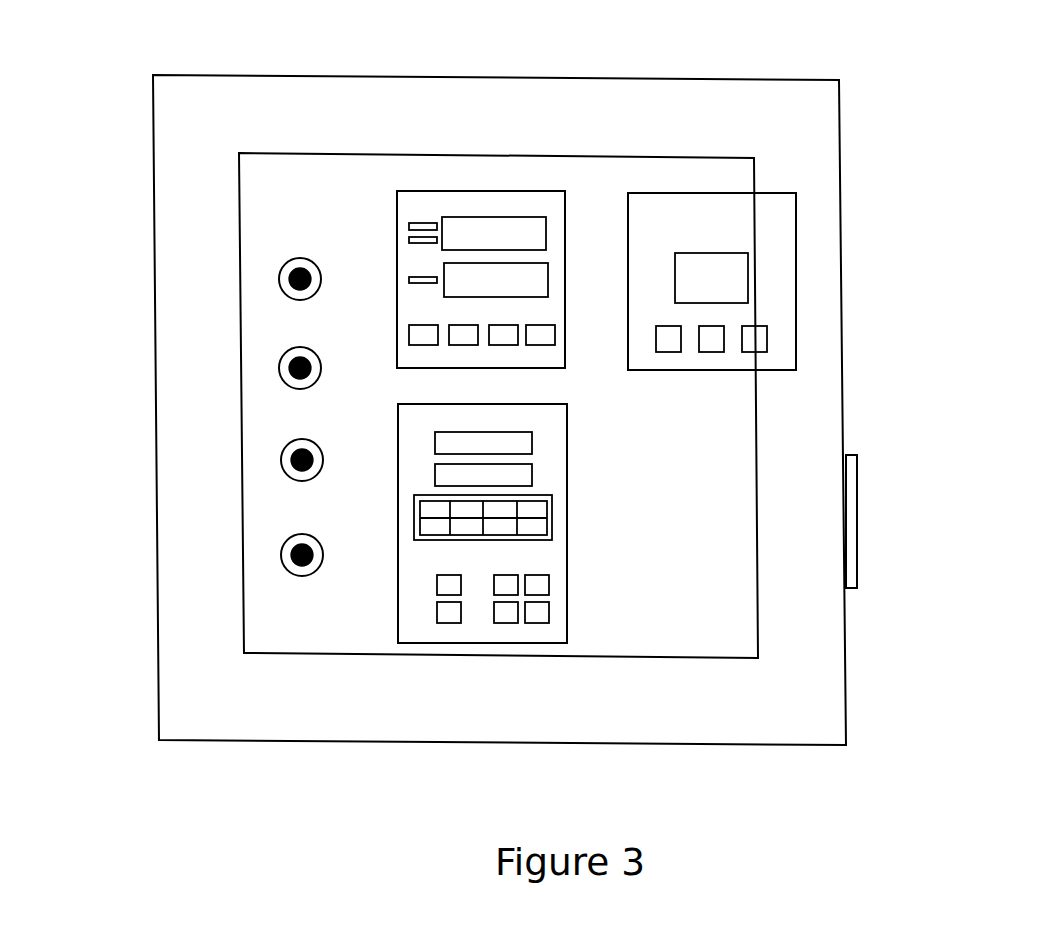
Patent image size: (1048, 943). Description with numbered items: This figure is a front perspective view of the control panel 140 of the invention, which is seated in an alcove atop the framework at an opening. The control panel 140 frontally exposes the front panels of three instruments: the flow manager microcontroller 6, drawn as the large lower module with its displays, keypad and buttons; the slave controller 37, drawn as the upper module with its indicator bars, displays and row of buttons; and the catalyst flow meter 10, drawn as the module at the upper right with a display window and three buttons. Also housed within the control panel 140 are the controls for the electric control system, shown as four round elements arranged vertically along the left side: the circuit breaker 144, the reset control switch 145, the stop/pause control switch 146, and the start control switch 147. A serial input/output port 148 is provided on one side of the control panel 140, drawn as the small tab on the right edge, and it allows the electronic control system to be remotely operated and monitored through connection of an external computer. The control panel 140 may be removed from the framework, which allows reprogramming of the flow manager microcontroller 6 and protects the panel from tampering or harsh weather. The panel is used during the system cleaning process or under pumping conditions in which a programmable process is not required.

The control panel 140 is at (777, 106).
The serial input/output port 148 is at (857, 543).
The slave controller 37 is at (431, 202).
The catalyst flow meter 10 is at (783, 272).
The flow manager microcontroller 6 is at (408, 628).
The circuit breaker 144 is at (279, 282).
The reset control switch 145 is at (279, 372).
The stop/pause control switch 146 is at (281, 468).
The start control switch 147 is at (281, 562).